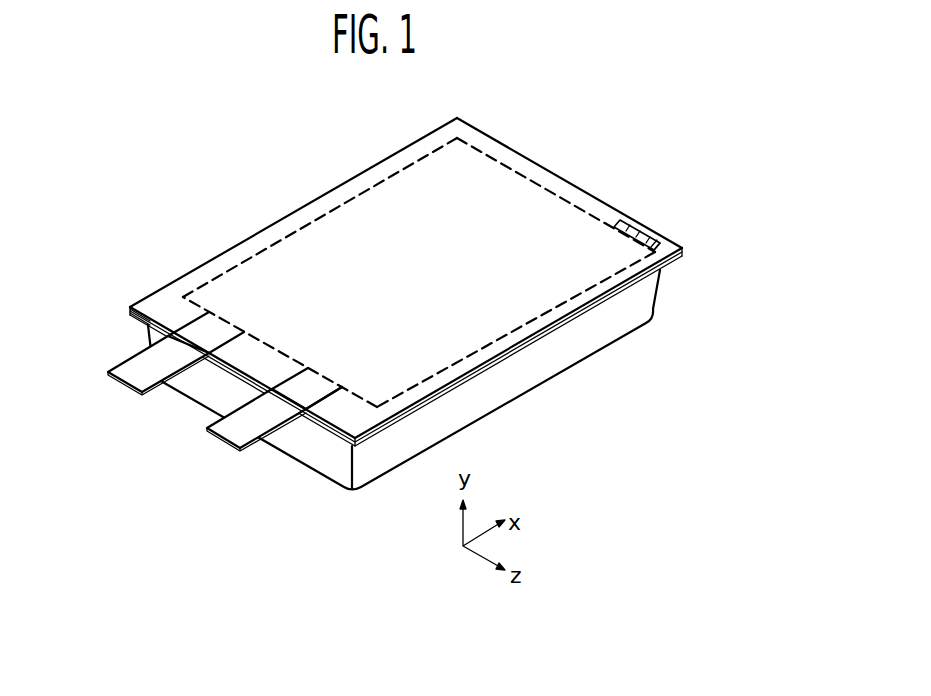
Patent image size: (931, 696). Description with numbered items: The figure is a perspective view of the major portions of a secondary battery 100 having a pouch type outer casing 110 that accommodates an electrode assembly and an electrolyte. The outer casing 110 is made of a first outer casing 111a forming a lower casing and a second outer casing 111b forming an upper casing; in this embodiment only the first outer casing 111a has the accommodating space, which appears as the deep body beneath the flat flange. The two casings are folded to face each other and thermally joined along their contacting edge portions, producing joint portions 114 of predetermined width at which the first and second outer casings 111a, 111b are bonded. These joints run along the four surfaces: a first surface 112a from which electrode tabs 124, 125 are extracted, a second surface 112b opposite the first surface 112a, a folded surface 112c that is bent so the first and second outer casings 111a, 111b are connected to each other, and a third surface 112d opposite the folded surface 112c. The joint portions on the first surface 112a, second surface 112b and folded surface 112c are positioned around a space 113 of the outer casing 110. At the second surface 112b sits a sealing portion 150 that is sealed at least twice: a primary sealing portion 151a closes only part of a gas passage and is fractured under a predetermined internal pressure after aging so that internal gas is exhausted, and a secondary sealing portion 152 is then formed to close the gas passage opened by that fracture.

The secondary battery 100 is at (441, 318).
The outer casing 110 is at (441, 338).
The first outer casing 111a is at (683, 260).
The second outer casing 111b is at (435, 338).
The first surface 112a is at (350, 444).
The second surface 112b is at (580, 188).
The folded surface 112c is at (165, 286).
The third surface 112d is at (622, 295).
The space 113 is at (133, 312).
The joint portions 114 is at (332, 412).
The electrode tab 124 is at (143, 377).
The electrode tab 125 is at (232, 436).
The sealing portion 150 is at (680, 185).
The primary sealing portion 151a is at (647, 228).
The secondary sealing portion 152 is at (662, 238).